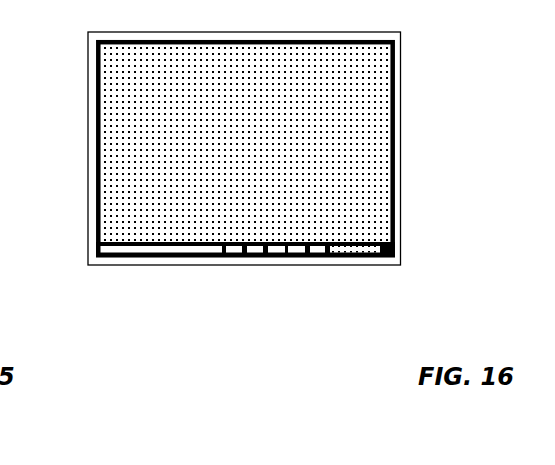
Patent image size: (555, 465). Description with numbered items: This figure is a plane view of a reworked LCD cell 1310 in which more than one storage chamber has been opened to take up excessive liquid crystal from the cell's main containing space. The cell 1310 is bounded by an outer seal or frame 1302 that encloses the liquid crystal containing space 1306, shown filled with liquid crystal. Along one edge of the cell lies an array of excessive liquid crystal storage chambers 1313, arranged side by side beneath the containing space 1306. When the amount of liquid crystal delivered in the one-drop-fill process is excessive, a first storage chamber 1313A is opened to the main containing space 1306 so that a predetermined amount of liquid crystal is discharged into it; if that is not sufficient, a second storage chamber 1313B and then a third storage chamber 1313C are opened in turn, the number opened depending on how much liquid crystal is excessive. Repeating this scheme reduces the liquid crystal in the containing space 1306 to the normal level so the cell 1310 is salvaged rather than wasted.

The display screen frame 1302 is at (205, 148).
The display content area 1306 is at (265, 148).
The reworked LCD cell 1310 is at (128, 281).
The toolbar 1313 is at (290, 275).
The toolbar indicator region 1313A is at (383, 248).
The toolbar border 1313B is at (363, 248).
The toolbar buttons 1313C is at (342, 250).